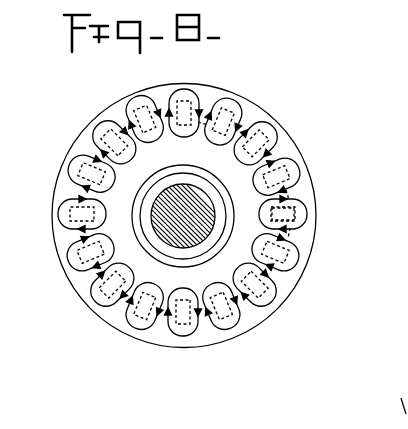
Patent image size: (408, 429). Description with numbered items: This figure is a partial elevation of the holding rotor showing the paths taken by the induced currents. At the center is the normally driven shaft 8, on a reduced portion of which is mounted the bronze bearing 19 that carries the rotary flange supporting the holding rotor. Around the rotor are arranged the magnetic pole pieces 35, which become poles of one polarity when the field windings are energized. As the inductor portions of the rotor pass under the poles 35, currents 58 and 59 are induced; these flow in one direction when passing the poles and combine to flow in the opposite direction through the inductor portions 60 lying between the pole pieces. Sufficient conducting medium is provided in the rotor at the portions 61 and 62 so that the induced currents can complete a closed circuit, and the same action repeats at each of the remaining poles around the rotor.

The normally driven shaft 8 is at (150, 243).
The bronze bearing 19 is at (178, 248).
The pole pieces 35 is at (292, 192).
The induced current 58 is at (270, 135).
The induced current 59 is at (290, 161).
The inductor portions 60 is at (243, 306).
The conducting portion 61 is at (192, 146).
The conducting portion 62 is at (298, 242).